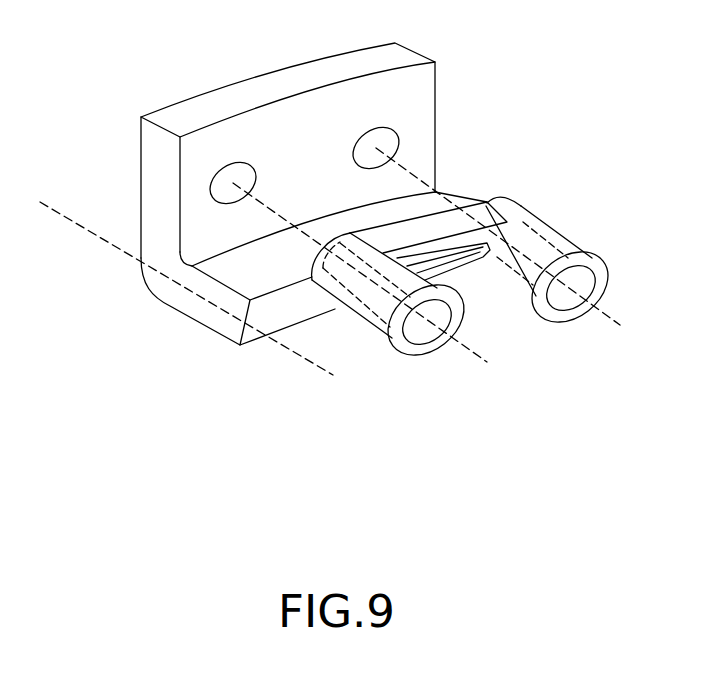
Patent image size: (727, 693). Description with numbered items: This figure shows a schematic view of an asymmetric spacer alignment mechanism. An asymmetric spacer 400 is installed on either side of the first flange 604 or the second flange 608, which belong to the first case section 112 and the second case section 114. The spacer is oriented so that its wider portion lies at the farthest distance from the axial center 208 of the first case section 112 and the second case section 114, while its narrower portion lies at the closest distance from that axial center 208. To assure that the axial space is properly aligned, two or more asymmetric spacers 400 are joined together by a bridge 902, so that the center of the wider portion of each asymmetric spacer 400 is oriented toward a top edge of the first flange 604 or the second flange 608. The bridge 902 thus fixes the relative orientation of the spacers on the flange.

The first flange 604 is at (170, 118).
The second flange 608 is at (288, 154).
The first case section 112 is at (220, 303).
The second case section 114 is at (238, 298).
The axial center 208 is at (72, 217).
The bridge 902 is at (468, 220).
The asymmetric spacer 400 is at (556, 232).